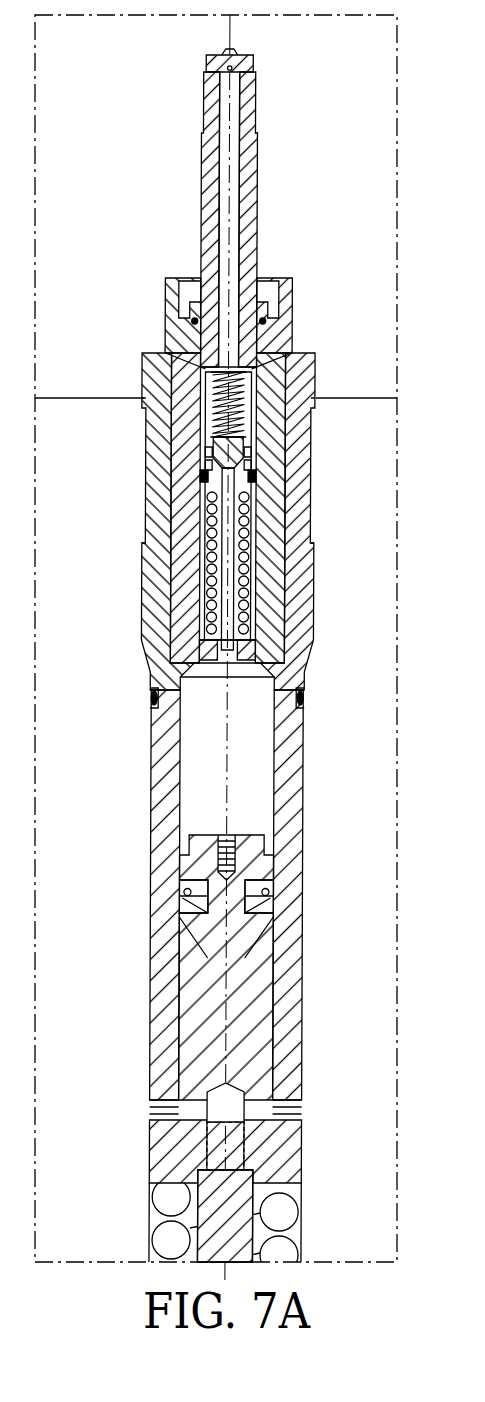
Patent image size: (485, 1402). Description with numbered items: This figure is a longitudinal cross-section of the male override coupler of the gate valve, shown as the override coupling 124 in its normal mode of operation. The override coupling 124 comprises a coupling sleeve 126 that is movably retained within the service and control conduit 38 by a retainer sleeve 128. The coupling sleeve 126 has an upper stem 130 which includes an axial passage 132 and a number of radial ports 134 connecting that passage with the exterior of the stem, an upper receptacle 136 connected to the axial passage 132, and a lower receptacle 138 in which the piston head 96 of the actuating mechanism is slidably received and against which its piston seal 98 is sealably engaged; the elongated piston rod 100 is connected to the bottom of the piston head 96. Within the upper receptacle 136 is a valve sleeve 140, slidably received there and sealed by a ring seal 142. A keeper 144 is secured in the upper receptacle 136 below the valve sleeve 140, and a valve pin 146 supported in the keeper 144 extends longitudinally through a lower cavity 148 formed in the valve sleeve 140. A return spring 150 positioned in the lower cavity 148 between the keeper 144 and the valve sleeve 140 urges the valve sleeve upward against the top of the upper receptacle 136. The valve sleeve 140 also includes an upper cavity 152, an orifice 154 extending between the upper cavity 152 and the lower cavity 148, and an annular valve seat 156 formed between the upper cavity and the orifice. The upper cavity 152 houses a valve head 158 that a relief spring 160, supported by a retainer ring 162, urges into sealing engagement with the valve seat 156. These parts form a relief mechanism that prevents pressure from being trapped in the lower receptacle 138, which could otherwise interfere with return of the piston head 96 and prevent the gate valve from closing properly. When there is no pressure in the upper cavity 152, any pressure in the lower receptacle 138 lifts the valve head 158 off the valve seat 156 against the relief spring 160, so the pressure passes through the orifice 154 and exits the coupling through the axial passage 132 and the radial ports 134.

The service and control conduit 38 is at (297, 1010).
The piston head 96 is at (276, 1056).
The piston seal 98 is at (272, 902).
The elongated piston rod 100 is at (268, 1229).
The override coupling 124 is at (312, 260).
The coupling sleeve 126 is at (282, 609).
The retainer sleeve 128 is at (148, 378).
The stem 130 is at (203, 162).
The axial passage 132 is at (245, 125).
The radial ports 134 is at (247, 58).
The upper receptacle 136 is at (210, 536).
The lower receptacle 138 is at (276, 788).
The valve sleeve 140 is at (258, 463).
The ring seal 142 is at (262, 485).
The keeper 144 is at (268, 641).
The valve pin 146 is at (186, 572).
The lower cavity 148 is at (265, 500).
The return spring 150 is at (165, 597).
The upper cavity 152 is at (170, 345).
The orifice 154 is at (212, 500).
The annular valve seat 156 is at (262, 441).
The valve head 158 is at (205, 455).
The relief spring 160 is at (263, 395).
The retainer ring 162 is at (258, 368).